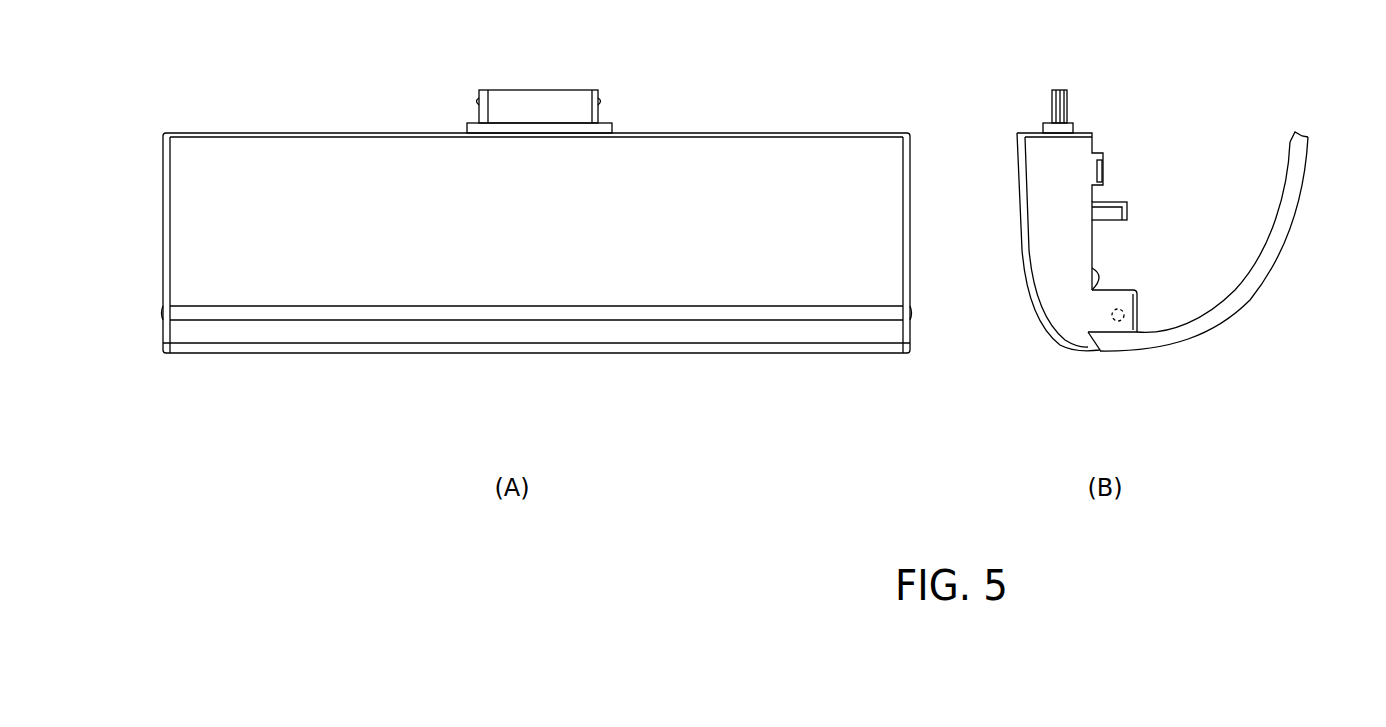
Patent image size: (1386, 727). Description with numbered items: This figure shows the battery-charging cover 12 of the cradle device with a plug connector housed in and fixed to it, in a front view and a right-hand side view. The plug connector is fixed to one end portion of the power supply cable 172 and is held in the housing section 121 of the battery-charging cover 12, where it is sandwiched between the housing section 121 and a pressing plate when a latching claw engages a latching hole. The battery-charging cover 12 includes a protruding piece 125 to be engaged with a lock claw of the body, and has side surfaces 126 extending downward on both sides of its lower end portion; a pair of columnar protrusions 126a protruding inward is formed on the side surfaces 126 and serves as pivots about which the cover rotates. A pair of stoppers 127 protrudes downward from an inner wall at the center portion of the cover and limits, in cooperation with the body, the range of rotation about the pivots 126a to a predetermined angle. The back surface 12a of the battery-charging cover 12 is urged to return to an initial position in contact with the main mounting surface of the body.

The battery-charging cover 12 is at (851, 133).
The housing section 121 is at (1048, 206).
The stoppers 127 is at (1130, 203).
The back surface 12a is at (1093, 243).
The protruding piece 125 is at (1097, 270).
The side surfaces 126 is at (1105, 305).
The columnar protrusions 126a is at (1120, 322).
The power supply cable 172 is at (1240, 298).